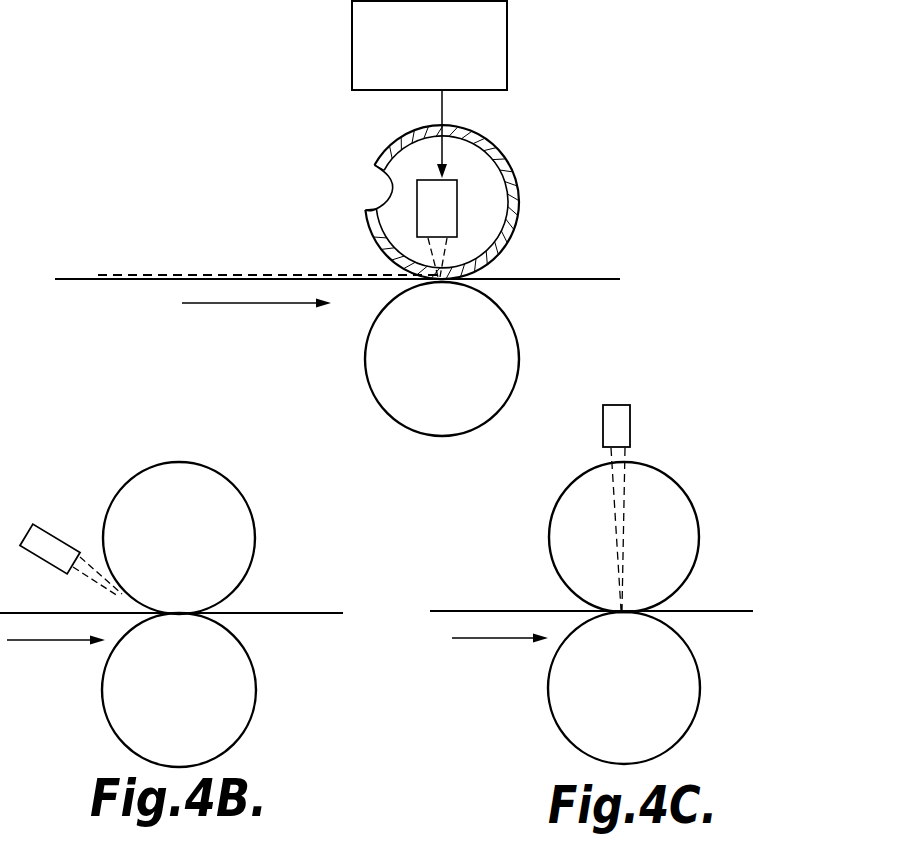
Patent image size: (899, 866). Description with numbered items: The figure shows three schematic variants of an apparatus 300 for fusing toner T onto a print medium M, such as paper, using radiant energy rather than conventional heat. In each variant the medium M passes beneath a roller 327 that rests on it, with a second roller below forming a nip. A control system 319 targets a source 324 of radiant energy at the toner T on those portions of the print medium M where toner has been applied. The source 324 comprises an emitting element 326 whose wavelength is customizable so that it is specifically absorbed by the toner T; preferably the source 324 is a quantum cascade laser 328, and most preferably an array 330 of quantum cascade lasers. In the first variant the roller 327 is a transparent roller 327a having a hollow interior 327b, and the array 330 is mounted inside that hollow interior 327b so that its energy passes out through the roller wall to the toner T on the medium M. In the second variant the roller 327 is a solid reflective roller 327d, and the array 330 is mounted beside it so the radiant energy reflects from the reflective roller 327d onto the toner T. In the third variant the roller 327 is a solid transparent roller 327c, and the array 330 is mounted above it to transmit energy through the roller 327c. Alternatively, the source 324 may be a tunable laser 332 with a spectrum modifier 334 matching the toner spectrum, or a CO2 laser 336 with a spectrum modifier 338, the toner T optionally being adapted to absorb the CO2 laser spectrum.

In FIG. 4A, the apparatus 300 is at (562, 76).
In FIG. 4A, the control system 319 is at (352, 28).
In FIG. 4A, the roller 327 is at (385, 201).
In FIG. 4C, the roller 327 is at (692, 537).
In FIG. 4A, the transparent roller 327a is at (370, 168).
In FIG. 4A, the hollow interior 327b is at (368, 210).
In FIG. 4C, the transparent roller 327c is at (678, 535).
In FIG. 4B, the reflective roller 327d is at (238, 497).
In FIG. 4A, the source of radiant energy 324 is at (613, 197).
In FIG. 4A, the emitting element 326 is at (613, 197).
In FIG. 4A, the quantum cascade laser 328 is at (613, 197).
In FIG. 4A, the array of quantum cascade lasers 330 is at (613, 197).
In FIG. 4B, the array of quantum cascade lasers 330 is at (55, 528).
In FIG. 4C, the array of quantum cascade lasers 330 is at (630, 418).
In FIG. 4A, the tunable laser 332 is at (613, 197).
In FIG. 4A, the spectrum modifier 334 is at (613, 197).
In FIG. 4A, the CO2 laser 336 is at (613, 197).
In FIG. 4A, the spectrum modifier 338 is at (445, 203).
In FIG. 4A, the toner T is at (147, 272).
In FIG. 4A, the print medium M is at (530, 279).
In FIG. 4B, the print medium M is at (257, 614).
In FIG. 4C, the print medium M is at (707, 612).